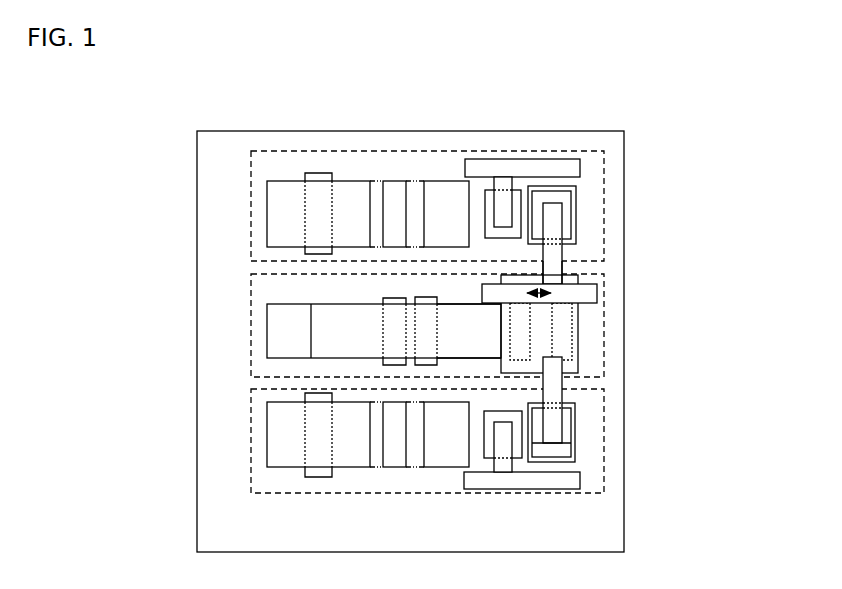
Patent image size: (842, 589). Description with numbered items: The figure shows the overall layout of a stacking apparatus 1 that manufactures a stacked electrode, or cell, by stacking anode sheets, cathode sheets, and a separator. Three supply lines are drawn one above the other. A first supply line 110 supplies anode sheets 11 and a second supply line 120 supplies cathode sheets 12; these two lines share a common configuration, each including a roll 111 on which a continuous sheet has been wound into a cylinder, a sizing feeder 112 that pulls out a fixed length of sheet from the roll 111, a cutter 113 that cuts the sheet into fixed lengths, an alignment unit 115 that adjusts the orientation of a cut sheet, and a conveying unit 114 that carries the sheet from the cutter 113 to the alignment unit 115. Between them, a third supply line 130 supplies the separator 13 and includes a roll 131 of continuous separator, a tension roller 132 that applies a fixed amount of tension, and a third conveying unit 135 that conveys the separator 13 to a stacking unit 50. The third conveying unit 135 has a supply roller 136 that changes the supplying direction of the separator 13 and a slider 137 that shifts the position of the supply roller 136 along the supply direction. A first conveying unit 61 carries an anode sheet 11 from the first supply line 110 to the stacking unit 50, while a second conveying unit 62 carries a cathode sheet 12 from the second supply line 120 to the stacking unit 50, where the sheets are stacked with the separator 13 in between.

The stacking apparatus 1 is at (612, 145).
The anode sheet 11 is at (563, 450).
The cathode sheet 12 is at (567, 217).
The separator 13 is at (477, 348).
The stacking unit 50 is at (585, 358).
The first conveying unit 61 is at (564, 382).
The second conveying unit 62 is at (567, 267).
The first supply line 110 is at (583, 423).
The roll 111 is at (346, 190).
The sizing feeder 112 is at (390, 188).
The cutter 113 is at (441, 187).
The conveying unit 114 is at (498, 165).
The alignment unit 115 is at (549, 187).
The second supply line 120 is at (585, 203).
The third supply line 130 is at (603, 315).
The roll 131 is at (285, 338).
The tension roller 132 is at (393, 300).
The third conveying unit 135 is at (497, 273).
The supply roller 136 is at (518, 334).
The slider 137 is at (483, 299).